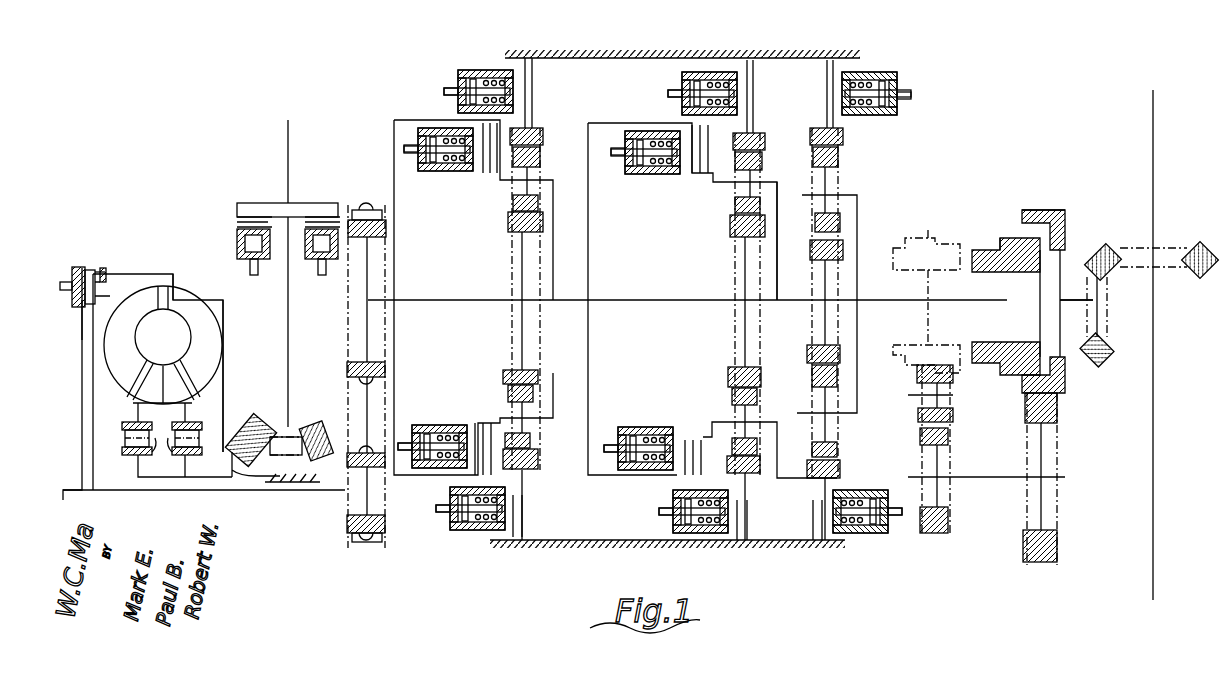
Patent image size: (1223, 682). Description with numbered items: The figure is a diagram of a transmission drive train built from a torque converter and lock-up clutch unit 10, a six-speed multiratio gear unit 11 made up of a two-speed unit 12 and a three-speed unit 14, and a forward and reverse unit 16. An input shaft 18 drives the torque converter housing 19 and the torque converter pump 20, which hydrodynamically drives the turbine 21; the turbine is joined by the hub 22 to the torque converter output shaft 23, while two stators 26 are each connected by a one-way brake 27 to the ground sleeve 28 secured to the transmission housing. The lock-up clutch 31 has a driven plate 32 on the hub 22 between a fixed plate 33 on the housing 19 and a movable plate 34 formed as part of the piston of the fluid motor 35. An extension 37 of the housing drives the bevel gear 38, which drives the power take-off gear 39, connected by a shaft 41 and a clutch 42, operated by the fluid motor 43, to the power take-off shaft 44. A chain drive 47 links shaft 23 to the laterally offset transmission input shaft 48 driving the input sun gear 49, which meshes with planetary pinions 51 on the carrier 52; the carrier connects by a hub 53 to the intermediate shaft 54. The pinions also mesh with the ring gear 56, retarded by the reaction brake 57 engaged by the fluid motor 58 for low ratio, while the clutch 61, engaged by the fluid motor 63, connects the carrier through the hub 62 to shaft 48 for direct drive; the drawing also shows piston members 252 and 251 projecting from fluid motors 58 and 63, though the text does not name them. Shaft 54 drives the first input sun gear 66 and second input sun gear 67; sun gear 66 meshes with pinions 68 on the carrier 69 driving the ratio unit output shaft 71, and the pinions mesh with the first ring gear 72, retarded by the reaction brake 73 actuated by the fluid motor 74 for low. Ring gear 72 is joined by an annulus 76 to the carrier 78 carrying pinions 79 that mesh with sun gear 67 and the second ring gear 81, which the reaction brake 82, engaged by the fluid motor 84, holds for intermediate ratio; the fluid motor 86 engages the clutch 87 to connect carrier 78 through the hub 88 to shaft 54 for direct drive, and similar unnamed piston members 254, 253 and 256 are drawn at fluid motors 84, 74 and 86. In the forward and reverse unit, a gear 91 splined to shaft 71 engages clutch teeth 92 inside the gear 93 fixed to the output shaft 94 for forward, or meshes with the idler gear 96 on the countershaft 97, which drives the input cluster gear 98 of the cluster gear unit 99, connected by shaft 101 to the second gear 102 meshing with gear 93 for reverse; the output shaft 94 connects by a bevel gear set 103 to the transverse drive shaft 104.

The torque converter and lock-up clutch unit 10 is at (198, 294).
The multiratio gear unit 11 is at (606, 548).
The two-speed unit 12 is at (394, 138).
The three-speed unit 14 is at (846, 172).
The forward and reverse unit 16 is at (1056, 203).
The input shaft 18 is at (63, 500).
The torque converter housing 19 is at (176, 274).
The torque converter pump 20 is at (208, 322).
The torque converter turbine 21 is at (124, 386).
The hub 22 is at (122, 455).
The torque converter output shaft 23 is at (195, 490).
The stators 26 is at (164, 360).
The one-way brake 27 is at (185, 457).
The ground sleeve 28 is at (234, 472).
The lock-up clutch 31 is at (116, 272).
The driven plate 32 is at (93, 328).
The fixed plate 33 is at (100, 278).
The movable plate 34 is at (108, 270).
The fluid motor 35 is at (78, 267).
The extension 37 is at (226, 380).
The bevel gear 38 is at (236, 432).
The power take-off gear 39 is at (312, 432).
The shaft 41 is at (348, 310).
The clutch 42 is at (237, 215).
The fluid motor 43 is at (272, 259).
The power take-off shaft 44 is at (288, 150).
The chain drive 47 is at (347, 364).
The transmission input shaft 48 is at (492, 300).
The input sun gear 49 is at (508, 224).
The planetary pinions 51 is at (513, 203).
The carrier 52 is at (540, 158).
The hub 53 is at (553, 240).
The intermediate shaft 54 is at (688, 300).
The ring gear 56 is at (537, 128).
The reaction brake 57 is at (532, 95).
The fluid motor 58 is at (498, 70).
The clutch 61 is at (483, 173).
The hub 62 is at (394, 217).
The fluid motor 63 is at (450, 128).
The first input sun gear 66 is at (815, 258).
The second input sun gear 67 is at (745, 238).
The pinions 68 is at (815, 238).
The carrier 69 is at (857, 212).
The ratio unit output shaft 71 is at (884, 300).
The first ring gear 72 is at (843, 135).
The reaction brake 73 is at (827, 94).
The fluid motor 74 is at (888, 78).
The annulus 76 is at (800, 155).
The carrier 78 is at (737, 190).
The pinions 79 is at (760, 203).
The second ring gear 81 is at (765, 138).
The reaction brake 82 is at (753, 92).
The fluid motor 84 is at (682, 106).
The fluid motor 86 is at (652, 174).
The clutch 87 is at (702, 173).
The hub 88 is at (588, 240).
The gear 91 is at (990, 272).
The clutch teeth 92 is at (1020, 238).
The gear 93 is at (1065, 222).
The output shaft 94 is at (1095, 306).
The idler gear 96 is at (953, 375).
The countershaft 97 is at (953, 400).
The input cluster gear 98 is at (948, 438).
The cluster gear unit 99 is at (962, 508).
The shaft 101 is at (980, 478).
The second gear 102 is at (1050, 418).
The bevel gear set 103 is at (1112, 272).
The transverse drive shaft 104 is at (1153, 410).
The piston rod 251 is at (404, 150).
The piston rod 252 is at (447, 88).
The piston rod 253 is at (911, 97).
The piston rod 254 is at (672, 90).
The piston rod 256 is at (618, 155).